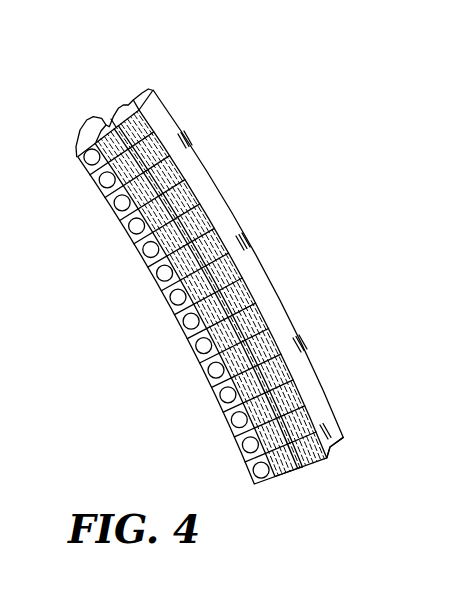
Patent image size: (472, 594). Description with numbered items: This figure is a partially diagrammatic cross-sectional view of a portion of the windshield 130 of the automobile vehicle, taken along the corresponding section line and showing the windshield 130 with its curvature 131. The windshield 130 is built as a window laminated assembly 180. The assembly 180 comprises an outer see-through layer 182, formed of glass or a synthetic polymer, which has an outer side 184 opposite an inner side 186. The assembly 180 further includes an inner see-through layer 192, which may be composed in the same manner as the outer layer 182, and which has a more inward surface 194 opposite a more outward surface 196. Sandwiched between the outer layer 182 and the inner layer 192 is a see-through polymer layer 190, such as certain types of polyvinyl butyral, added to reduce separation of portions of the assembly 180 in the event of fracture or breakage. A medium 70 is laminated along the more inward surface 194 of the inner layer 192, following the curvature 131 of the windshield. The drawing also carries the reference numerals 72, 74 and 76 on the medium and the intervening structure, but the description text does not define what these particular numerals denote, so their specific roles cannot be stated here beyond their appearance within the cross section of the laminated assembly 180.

The medium 70 is at (197, 384).
The intermediate hatched layer 72 is at (174, 304).
The cell divider 74 is at (140, 253).
The rail 76 is at (194, 213).
The windshield 130 is at (338, 466).
The curvature 131 is at (122, 222).
The window laminated assembly 180 is at (176, 110).
The outer see-through layer 182 is at (284, 314).
The outer side 184 is at (198, 167).
The inner side 186 is at (213, 252).
The see-through polymer layer 190 is at (309, 473).
The inner see-through layer 192 is at (291, 471).
The more inward surface 194 is at (174, 273).
The more outward surface 196 is at (135, 188).